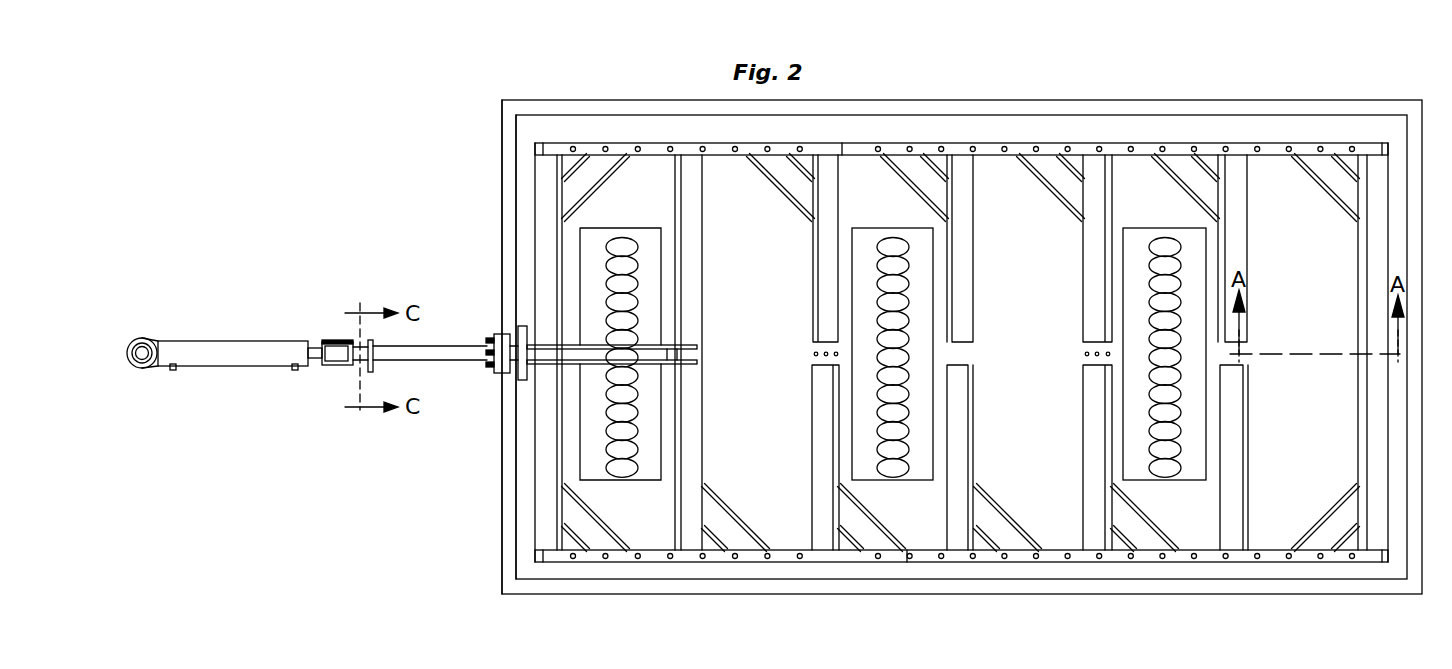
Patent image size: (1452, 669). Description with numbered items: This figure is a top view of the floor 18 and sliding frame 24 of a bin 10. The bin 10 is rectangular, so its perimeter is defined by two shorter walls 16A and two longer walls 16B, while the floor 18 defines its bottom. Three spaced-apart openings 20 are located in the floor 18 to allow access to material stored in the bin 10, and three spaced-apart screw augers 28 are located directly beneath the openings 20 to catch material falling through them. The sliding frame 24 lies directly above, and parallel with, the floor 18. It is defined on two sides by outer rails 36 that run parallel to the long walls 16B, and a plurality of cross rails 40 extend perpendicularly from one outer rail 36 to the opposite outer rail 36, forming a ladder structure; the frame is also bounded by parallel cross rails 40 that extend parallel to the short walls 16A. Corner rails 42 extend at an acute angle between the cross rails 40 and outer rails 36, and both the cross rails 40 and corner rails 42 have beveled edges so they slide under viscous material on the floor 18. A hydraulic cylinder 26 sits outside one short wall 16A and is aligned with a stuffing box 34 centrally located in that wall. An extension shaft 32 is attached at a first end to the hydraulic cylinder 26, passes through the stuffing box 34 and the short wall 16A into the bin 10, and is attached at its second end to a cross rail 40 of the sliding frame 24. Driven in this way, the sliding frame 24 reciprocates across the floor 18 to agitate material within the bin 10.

The bin 10 is at (1183, 80).
The short wall 16A is at (508, 150).
The long wall 16B is at (1253, 107).
The floor 18 is at (1047, 371).
The opening 20 is at (600, 232).
The sliding frame 24 is at (830, 180).
The hydraulic cylinder 26 is at (251, 352).
The screw auger 28 is at (600, 468).
The extension shaft 32 is at (463, 350).
The stuffing box 34 is at (507, 353).
The outer rail 36 is at (823, 550).
The cross rail 40 is at (958, 505).
The corner rail 42 is at (1010, 535).